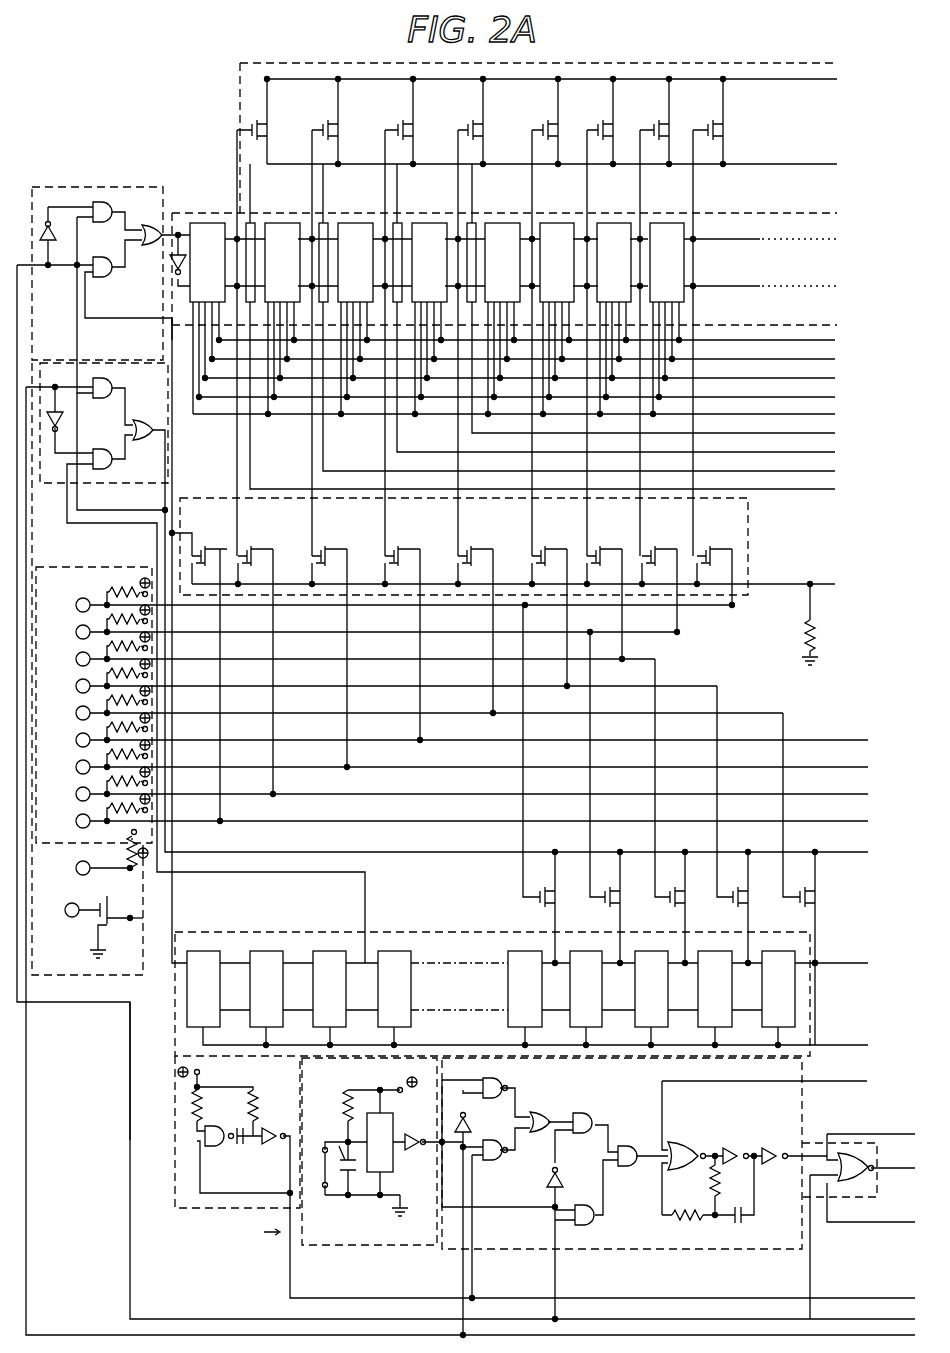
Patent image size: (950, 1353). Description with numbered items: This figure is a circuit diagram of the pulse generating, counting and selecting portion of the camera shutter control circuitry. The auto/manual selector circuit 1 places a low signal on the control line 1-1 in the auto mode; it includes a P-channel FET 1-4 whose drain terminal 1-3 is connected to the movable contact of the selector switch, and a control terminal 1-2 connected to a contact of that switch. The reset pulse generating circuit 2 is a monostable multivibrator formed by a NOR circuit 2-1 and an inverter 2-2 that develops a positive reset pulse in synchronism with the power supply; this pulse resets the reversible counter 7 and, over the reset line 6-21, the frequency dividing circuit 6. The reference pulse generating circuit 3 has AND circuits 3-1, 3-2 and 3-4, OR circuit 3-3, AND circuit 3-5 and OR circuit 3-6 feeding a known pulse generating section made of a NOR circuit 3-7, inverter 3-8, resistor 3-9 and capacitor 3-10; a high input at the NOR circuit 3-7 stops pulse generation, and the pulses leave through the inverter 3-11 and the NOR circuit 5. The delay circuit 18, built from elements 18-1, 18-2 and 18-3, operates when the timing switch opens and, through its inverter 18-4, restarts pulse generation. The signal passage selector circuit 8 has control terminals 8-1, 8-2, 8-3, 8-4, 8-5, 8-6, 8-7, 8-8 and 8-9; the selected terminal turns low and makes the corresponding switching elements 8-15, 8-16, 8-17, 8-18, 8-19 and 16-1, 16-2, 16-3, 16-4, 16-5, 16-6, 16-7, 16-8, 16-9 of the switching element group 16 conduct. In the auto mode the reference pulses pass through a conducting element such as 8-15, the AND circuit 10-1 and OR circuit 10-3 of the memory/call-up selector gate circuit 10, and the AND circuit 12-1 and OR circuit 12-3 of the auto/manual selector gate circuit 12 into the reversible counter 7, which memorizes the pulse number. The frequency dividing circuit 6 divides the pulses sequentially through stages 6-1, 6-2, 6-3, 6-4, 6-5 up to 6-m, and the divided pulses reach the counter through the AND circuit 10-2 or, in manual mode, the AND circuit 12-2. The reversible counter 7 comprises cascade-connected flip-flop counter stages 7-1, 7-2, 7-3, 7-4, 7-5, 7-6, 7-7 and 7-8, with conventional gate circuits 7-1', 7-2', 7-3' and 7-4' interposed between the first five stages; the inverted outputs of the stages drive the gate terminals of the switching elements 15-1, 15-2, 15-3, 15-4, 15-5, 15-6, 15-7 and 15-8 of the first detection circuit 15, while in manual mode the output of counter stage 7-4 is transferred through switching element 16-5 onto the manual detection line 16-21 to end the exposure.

The auto/manual selector circuit 1 is at (52, 975).
The control line 1-1 is at (128, 1138).
The control terminal 1-2 is at (98, 854).
The drain terminal 1-3 is at (97, 927).
The P-channel FET 1-4 is at (88, 908).
The reset pulse generating circuit 2 is at (180, 1212).
The NOR circuit 2-1 is at (213, 1118).
The inverter 2-2 is at (267, 1117).
The reference pulse generating circuit 3 is at (804, 1108).
The AND circuit 3-1 is at (492, 1165).
The AND circuit 3-2 is at (479, 1117).
The OR circuit 3-3 is at (538, 1113).
The AND circuit 3-4 is at (591, 1218).
The AND circuit 3-5 is at (583, 1115).
The OR circuit 3-6 is at (628, 1152).
The NOR circuit 3-7 is at (690, 1144).
The inverter 3-8 is at (738, 1144).
The resistor 3-9 is at (708, 1192).
The capacitor 3-10 is at (742, 1218).
The inverter 3-11 is at (772, 1148).
The NOR circuit 5 is at (870, 1190).
The frequency dividing circuit 6 is at (521, 994).
The frequency dividing stage 6-1 is at (778, 989).
The frequency dividing stage 6-2 is at (715, 989).
The frequency dividing stage 6-3 is at (651, 989).
The frequency dividing stage 6-4 is at (586, 989).
The frequency dividing stage 6-5 is at (525, 989).
The frequency dividing stage 6-m is at (203, 989).
The reset line 6-21 is at (834, 1054).
The reversible counter 7 is at (175, 212).
The flip-flop counter stage 7-1 is at (207, 318).
The flip-flop counter stage 7-2 is at (282, 320).
The flip-flop counter stage 7-3 is at (355, 320).
The flip-flop counter stage 7-4 is at (429, 320).
The flip-flop counter stage 7-5 is at (502, 320).
The flip-flop counter stage 7-6 is at (557, 320).
The flip-flop counter stage 7-7 is at (614, 320).
The flip-flop counter stage 7-8 is at (667, 320).
The gate circuit 7-1' is at (540, 326).
The gate circuit 7-2' is at (577, 317).
The gate circuit 7-3' is at (614, 308).
The gate circuit 7-4' is at (651, 298).
The signal passage selector circuit 8 is at (102, 572).
The control terminal 8-1 is at (453, 812).
The control terminal 8-2 is at (453, 785).
The control terminal 8-3 is at (453, 758).
The control terminal 8-4 is at (453, 731).
The control terminal 8-5 is at (410, 704).
The control terminal 8-6 is at (377, 677).
The control terminal 8-7 is at (346, 650).
The control terminal 8-8 is at (357, 623).
The control terminal 8-9 is at (385, 596).
The switching element 8-15 is at (808, 868).
The switching element 8-16 is at (740, 868).
The switching element 8-17 is at (674, 868).
The switching element 8-18 is at (610, 868).
The switching element 8-19 is at (543, 868).
The memory/call-up selector gate circuit 10 is at (45, 484).
The AND circuit 10-1 is at (108, 380).
The AND circuit 10-2 is at (100, 464).
The OR circuit 10-3 is at (148, 438).
The auto/manual selector gate circuit 12 is at (120, 194).
The AND circuit 12-1 is at (100, 222).
The AND circuit 12-2 is at (100, 277).
The OR circuit 12-3 is at (152, 252).
The first detection circuit 15 is at (240, 72).
The switching element 15-1 is at (266, 128).
The switching element 15-2 is at (338, 126).
The switching element 15-3 is at (414, 126).
The switching element 15-4 is at (483, 126).
The switching element 15-5 is at (549, 126).
The switching element 15-6 is at (606, 126).
The switching element 15-7 is at (664, 126).
The switching element 15-8 is at (721, 126).
The transistor array 16 is at (503, 661).
The switching element 16-1 is at (208, 548).
The switching element 16-2 is at (260, 548).
The switching element 16-3 is at (333, 548).
The switching element 16-4 is at (406, 548).
The switching element 16-5 is at (478, 548).
The switching element 16-6 is at (550, 548).
The switching element 16-7 is at (605, 548).
The switching element 16-8 is at (660, 548).
The switching element 16-9 is at (715, 548).
The manual detection line 16-21 is at (771, 584).
The delay circuit 18 is at (325, 1250).
The switch 18-1 is at (344, 1204).
The resistor 18-2 is at (328, 1118).
The delay element 18-3 is at (378, 1112).
The inverter 18-4 is at (404, 1132).